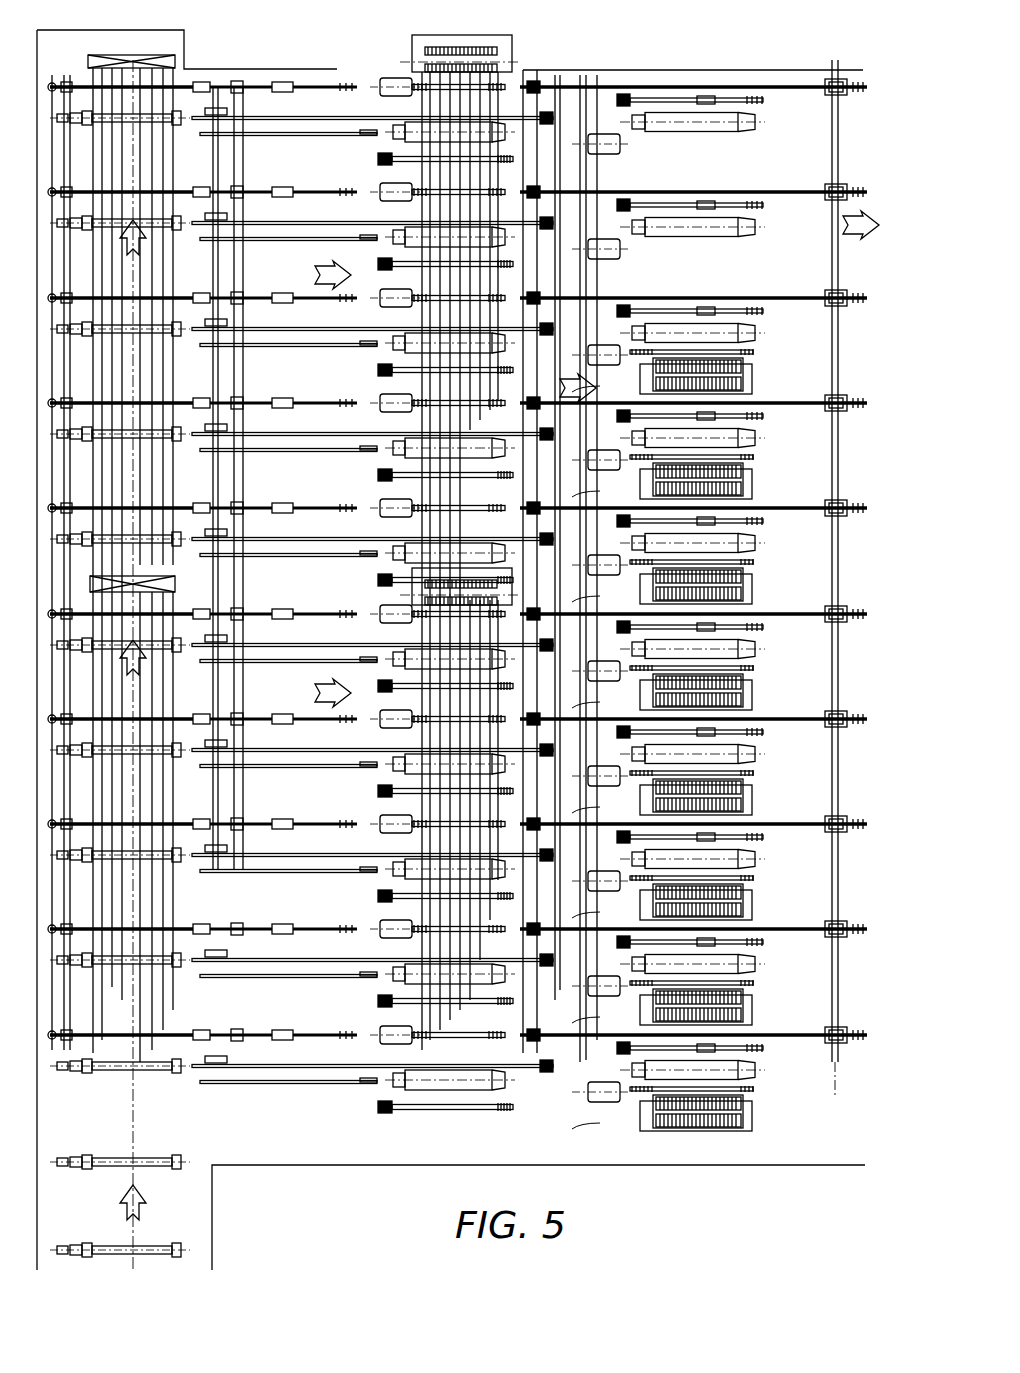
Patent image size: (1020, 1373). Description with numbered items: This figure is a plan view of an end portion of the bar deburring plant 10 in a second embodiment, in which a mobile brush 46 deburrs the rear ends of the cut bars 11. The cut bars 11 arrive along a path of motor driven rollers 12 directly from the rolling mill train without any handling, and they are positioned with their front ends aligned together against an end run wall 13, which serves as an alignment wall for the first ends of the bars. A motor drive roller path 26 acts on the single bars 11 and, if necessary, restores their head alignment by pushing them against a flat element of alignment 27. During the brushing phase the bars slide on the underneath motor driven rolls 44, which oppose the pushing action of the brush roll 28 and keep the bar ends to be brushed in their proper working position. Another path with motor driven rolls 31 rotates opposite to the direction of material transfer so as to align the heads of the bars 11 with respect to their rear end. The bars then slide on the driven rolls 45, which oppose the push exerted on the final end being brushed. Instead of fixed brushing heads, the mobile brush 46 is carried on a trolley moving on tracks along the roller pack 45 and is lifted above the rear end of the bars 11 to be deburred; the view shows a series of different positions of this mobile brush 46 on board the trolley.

The bar deburring plant 10 is at (287, 60).
The cut bars 11 is at (152, 920).
The motor driven rollers 12 is at (90, 862).
The end run wall 13 is at (175, 60).
The motor drive roller path 26 is at (385, 300).
The flat element of alignment 27 is at (410, 70).
The brush roll 28 is at (498, 50).
The motor driven rolls 31 is at (612, 258).
The motor driven rolls 44 is at (395, 775).
The driven rolls 45 is at (740, 968).
The mobile brush 46 is at (735, 908).